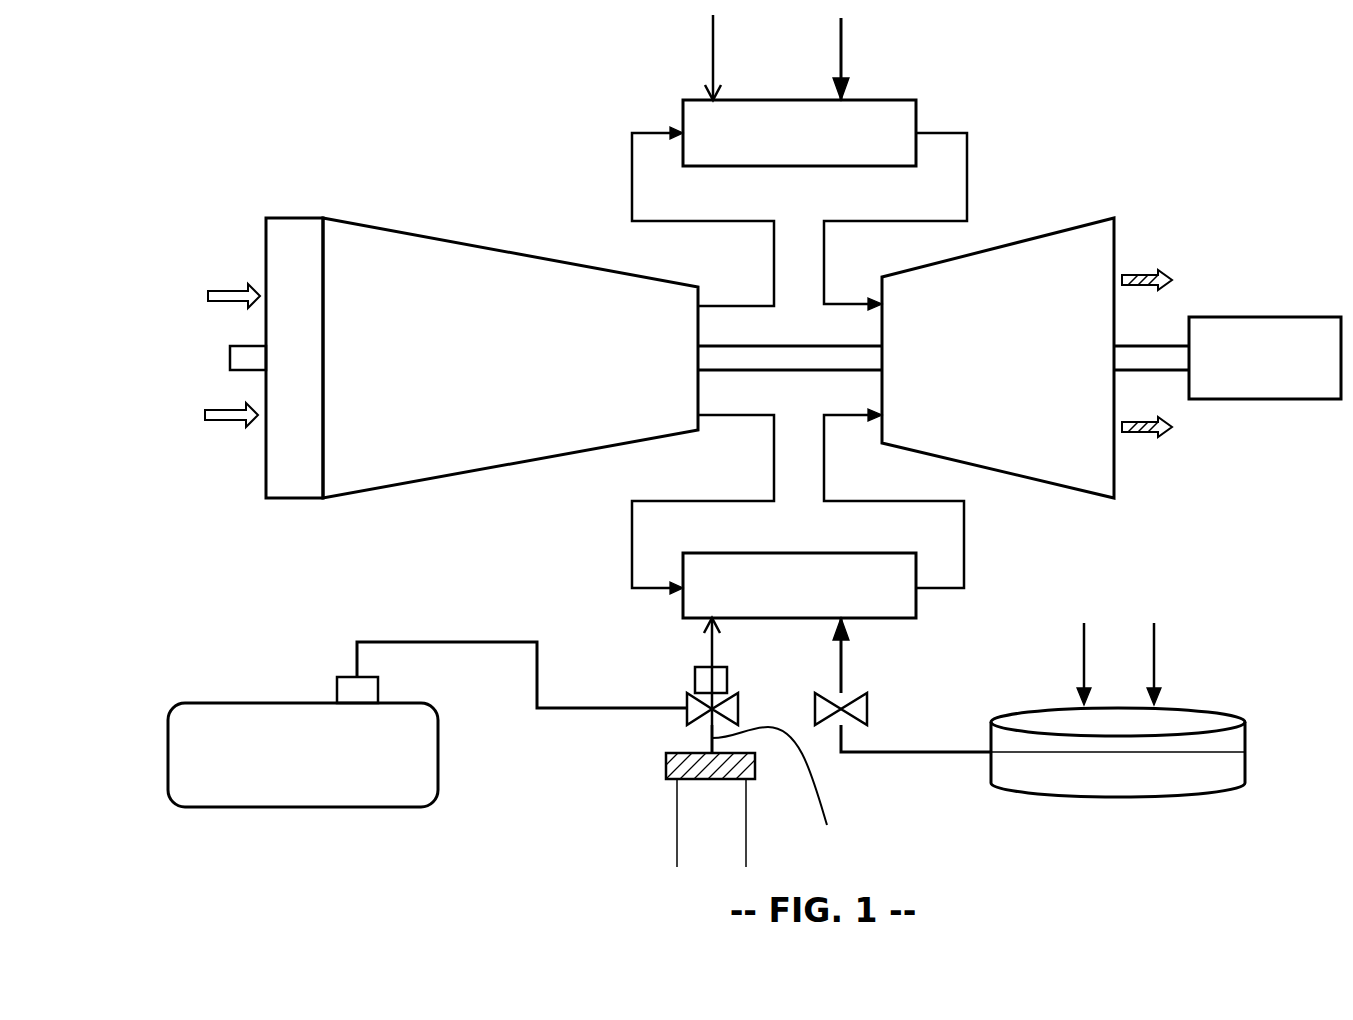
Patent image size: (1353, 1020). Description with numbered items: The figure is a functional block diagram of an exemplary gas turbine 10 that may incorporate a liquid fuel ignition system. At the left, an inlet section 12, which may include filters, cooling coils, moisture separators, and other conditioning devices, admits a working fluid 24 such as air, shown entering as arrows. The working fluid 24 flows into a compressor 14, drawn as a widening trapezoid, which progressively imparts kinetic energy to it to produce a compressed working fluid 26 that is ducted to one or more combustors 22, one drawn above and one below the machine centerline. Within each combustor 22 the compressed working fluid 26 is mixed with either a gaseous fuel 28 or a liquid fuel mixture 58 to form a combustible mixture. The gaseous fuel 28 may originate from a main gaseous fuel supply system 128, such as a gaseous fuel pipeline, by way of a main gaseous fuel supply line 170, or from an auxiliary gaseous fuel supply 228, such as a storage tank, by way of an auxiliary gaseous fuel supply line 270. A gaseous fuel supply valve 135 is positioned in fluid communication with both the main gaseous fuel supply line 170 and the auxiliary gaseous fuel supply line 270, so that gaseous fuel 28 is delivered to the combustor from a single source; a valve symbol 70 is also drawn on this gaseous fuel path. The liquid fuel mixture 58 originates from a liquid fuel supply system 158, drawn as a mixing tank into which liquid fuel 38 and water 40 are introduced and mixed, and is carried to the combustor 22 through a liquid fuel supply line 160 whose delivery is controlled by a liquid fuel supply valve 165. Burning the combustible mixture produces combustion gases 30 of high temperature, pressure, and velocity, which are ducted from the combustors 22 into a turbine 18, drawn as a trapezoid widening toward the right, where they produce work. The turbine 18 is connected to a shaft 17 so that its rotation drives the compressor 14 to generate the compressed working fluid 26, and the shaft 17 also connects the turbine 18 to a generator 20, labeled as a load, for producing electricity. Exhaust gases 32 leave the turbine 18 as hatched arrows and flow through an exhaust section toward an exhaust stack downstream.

The gas turbine 10 is at (430, 141).
The inlet section 12 is at (296, 217).
The compressor 14 is at (548, 260).
The shaft 17 is at (1175, 343).
The turbine 18 is at (1082, 225).
The generator 20 is at (1280, 316).
The combustor 22 is at (905, 98).
The working fluid 24 is at (236, 290).
The compressed working fluid 26 is at (628, 188).
The gaseous fuel 28 is at (709, 50).
The combustion gases 30 is at (968, 166).
The exhaust gases 32 is at (1128, 274).
The liquid fuel 38 is at (1082, 665).
The water 40 is at (1152, 665).
The liquid fuel mixture 58 is at (837, 50).
The fuel control valve 70 is at (694, 682).
The main gaseous fuel supply system 128 is at (678, 838).
The gaseous fuel supply valve 135 is at (740, 713).
The liquid fuel supply system 158 is at (1250, 702).
The liquid fuel supply line 160 is at (876, 753).
The liquid fuel supply valve 165 is at (870, 712).
The main gaseous fuel supply line 170 is at (789, 795).
The auxiliary gaseous fuel supply 228 is at (228, 702).
The auxiliary gaseous fuel supply line 270 is at (437, 641).